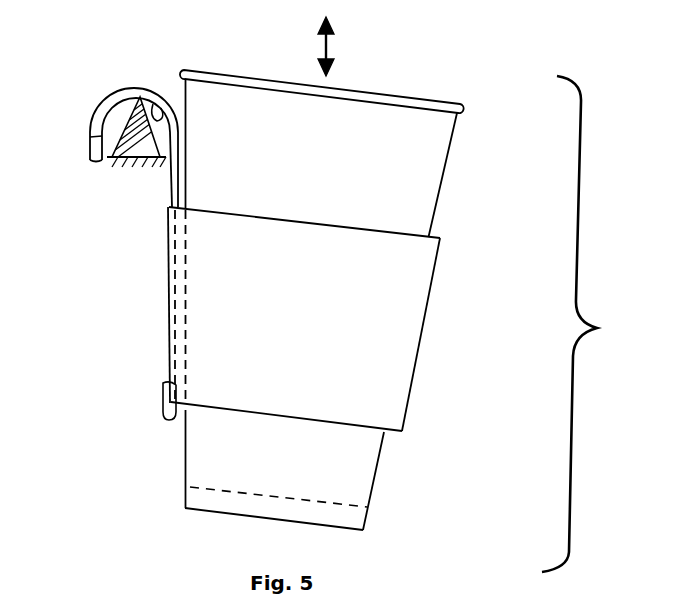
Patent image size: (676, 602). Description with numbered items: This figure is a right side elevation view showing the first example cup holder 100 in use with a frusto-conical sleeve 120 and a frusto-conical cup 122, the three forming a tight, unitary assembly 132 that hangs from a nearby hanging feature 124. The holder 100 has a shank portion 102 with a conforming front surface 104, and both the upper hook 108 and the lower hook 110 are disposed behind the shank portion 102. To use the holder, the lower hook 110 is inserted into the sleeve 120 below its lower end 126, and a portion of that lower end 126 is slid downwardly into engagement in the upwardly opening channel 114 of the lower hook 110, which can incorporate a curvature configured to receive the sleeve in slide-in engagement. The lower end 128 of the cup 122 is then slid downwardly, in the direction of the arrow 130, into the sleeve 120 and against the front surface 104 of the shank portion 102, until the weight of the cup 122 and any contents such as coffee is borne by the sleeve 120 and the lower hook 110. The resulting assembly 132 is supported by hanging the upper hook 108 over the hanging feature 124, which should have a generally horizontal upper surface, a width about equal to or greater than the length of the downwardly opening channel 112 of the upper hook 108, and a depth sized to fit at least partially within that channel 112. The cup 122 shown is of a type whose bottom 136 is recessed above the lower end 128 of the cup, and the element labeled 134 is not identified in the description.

The cup holder 100 is at (173, 187).
The shank portion 102 is at (167, 335).
The front surface 104 is at (167, 283).
The upper hook 108 is at (110, 93).
The lower hook 110 is at (160, 398).
The downwardly opening channel 112 is at (152, 90).
The upwardly opening channel 114 is at (170, 413).
The frusto-conical sleeve 120 is at (413, 310).
The frusto-conical cup 122 is at (432, 185).
The hanging feature 124 is at (127, 167).
The lower end of the sleeve 126 is at (213, 410).
The lower end of the cup 128 is at (330, 530).
The arrow 130 is at (329, 47).
The unitary assembly 132 is at (593, 324).
The base 134 is at (237, 503).
The cup bottom 136 is at (340, 498).